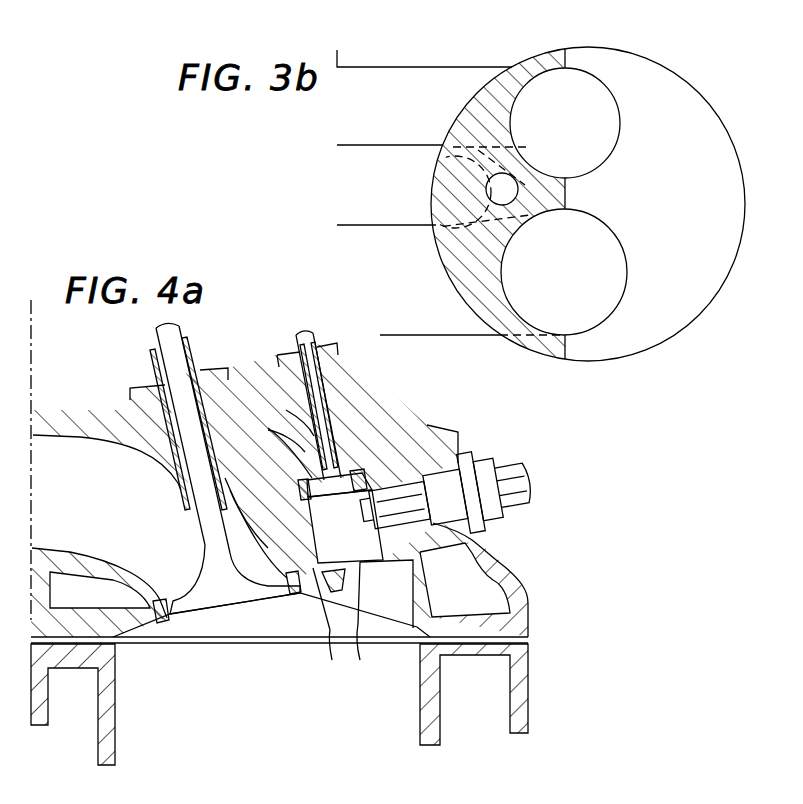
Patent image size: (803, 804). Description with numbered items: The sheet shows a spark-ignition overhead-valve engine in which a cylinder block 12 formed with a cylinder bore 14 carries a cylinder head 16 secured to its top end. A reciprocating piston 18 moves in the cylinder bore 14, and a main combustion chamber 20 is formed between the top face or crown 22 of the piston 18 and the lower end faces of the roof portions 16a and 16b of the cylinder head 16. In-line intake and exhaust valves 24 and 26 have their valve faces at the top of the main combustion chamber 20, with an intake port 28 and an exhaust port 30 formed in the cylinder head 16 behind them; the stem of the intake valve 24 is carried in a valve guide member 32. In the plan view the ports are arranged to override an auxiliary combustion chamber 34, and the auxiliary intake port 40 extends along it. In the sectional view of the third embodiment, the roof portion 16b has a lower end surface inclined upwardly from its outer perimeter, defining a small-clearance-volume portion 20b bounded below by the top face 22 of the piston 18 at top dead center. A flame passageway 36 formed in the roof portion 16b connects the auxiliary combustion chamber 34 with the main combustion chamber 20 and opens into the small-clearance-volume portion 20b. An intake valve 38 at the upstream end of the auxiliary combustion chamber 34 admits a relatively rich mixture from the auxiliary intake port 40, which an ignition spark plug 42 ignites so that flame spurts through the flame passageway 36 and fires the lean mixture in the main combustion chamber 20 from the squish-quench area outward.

In FIG. 4a, the cylinder block 12 is at (531, 688).
In FIG. 4a, the cylinder bore 14 is at (430, 735).
In FIG. 4a, the cylinder head 16 is at (531, 600).
In FIG. 3b, the roof portion 16a is at (504, 136).
In FIG. 4a, the roof portion 16a is at (142, 645).
In FIG. 3b, the roof portion 16b is at (684, 135).
In FIG. 4a, the roof portion 16b is at (383, 632).
In FIG. 4a, the reciprocating piston 18 is at (98, 763).
In FIG. 3b, the main combustion chamber 20 is at (713, 289).
In FIG. 4a, the main combustion chamber 20 is at (291, 628).
In FIG. 4a, the small-clearance-volume portion 20b is at (358, 658).
In FIG. 4a, the top face or crown 22 is at (243, 645).
In FIG. 3b, the intake valve 24 is at (603, 313).
In FIG. 4a, the intake valve 24 is at (205, 560).
In FIG. 3b, the exhaust valve 26 is at (597, 96).
In FIG. 3b, the intake port 28 is at (452, 338).
In FIG. 4a, the intake port 28 is at (112, 552).
In FIG. 3b, the exhaust port 30 is at (446, 68).
In FIG. 4a, the valve guide member 32 is at (185, 360).
In FIG. 4a, the auxiliary combustion chamber 34 is at (308, 497).
In FIG. 3b, the flame passageway 36 is at (505, 288).
In FIG. 4a, the flame passageway 36 is at (352, 640).
In FIG. 3b, the intake valve 38 is at (445, 230).
In FIG. 4a, the intake valve 38 is at (345, 458).
In FIG. 3b, the auxiliary intake port 40 is at (430, 182).
In FIG. 4a, the auxiliary intake port 40 is at (286, 410).
In FIG. 4a, the ignition spark plug 42 is at (362, 508).